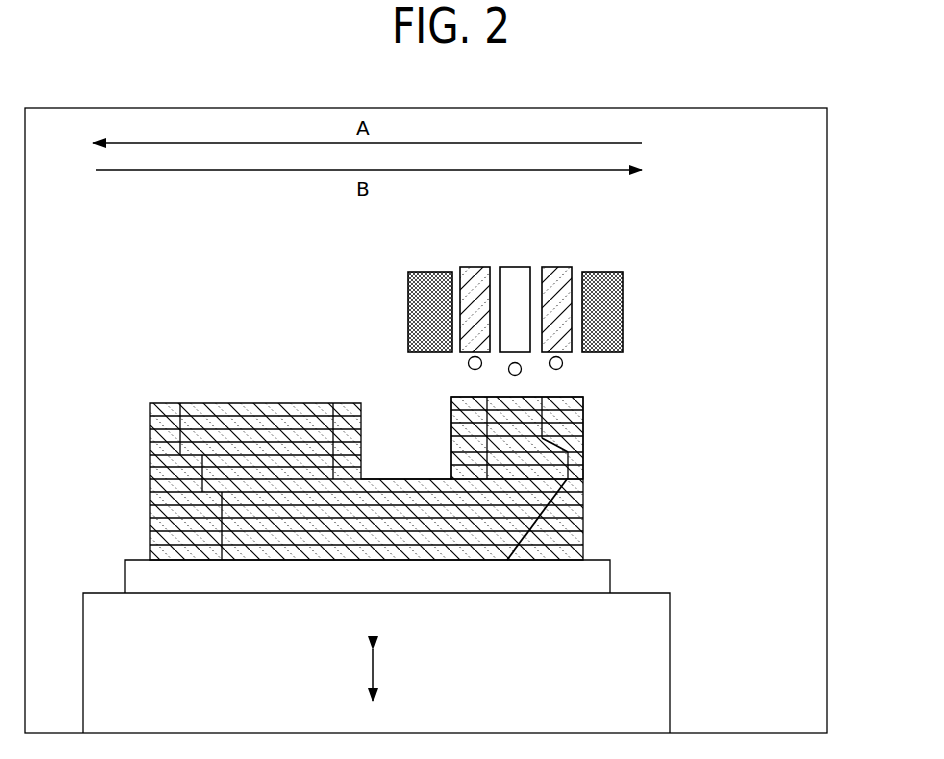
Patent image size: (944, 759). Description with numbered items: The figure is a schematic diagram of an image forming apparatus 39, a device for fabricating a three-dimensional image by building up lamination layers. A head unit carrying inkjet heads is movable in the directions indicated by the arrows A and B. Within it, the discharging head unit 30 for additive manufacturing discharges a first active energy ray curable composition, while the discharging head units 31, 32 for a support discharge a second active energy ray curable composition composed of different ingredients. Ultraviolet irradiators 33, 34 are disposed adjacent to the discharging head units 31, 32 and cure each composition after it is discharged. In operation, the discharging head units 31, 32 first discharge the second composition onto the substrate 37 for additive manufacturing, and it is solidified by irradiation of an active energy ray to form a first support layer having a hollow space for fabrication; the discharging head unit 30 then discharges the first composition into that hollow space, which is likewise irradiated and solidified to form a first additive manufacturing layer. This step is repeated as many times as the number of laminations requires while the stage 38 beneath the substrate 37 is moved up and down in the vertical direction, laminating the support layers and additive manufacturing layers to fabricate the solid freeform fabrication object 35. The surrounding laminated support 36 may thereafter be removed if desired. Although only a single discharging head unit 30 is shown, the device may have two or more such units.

The discharging head unit 30 is at (517, 266).
The discharging head unit 31 is at (480, 266).
The discharging head unit 32 is at (558, 266).
The ultraviolet irradiator 33 is at (407, 291).
The ultraviolet irradiator 34 is at (625, 291).
The solid freeform fabrication object 35 is at (272, 390).
The laminated support 36 is at (595, 425).
The substrate 37 is at (611, 573).
The stage 38 is at (671, 606).
The image forming apparatus 39 is at (829, 134).